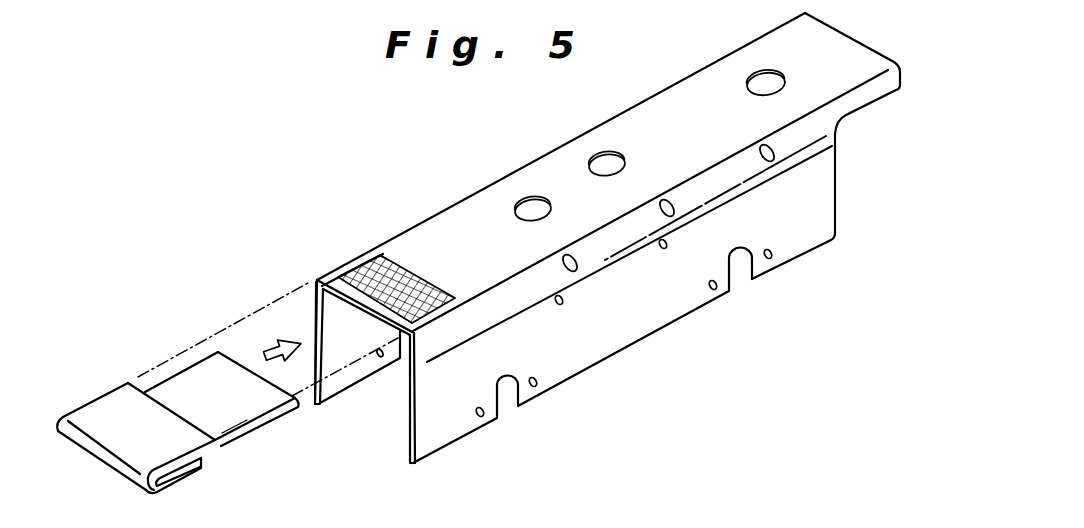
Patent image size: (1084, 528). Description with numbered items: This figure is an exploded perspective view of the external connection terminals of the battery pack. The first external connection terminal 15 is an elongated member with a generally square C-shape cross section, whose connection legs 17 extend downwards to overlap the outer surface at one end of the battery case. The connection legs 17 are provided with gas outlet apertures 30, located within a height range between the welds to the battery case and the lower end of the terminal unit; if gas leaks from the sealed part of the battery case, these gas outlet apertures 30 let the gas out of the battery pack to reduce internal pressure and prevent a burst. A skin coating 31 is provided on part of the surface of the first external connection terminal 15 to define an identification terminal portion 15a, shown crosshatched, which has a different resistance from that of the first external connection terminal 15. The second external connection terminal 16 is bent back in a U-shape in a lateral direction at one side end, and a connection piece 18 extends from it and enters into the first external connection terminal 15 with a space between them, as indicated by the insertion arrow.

The first external connection terminal 15 is at (477, 237).
The identification terminal portion 15a is at (394, 259).
The second external connection terminal 16 is at (126, 427).
The connection legs 17 is at (643, 315).
The connection piece 18 is at (233, 412).
The gas outlet apertures 30 is at (563, 300).
The skin coating 31 is at (355, 263).